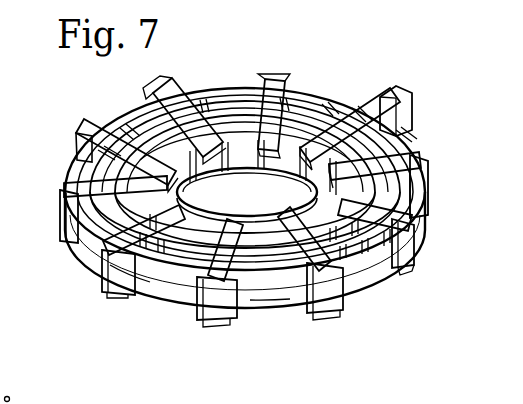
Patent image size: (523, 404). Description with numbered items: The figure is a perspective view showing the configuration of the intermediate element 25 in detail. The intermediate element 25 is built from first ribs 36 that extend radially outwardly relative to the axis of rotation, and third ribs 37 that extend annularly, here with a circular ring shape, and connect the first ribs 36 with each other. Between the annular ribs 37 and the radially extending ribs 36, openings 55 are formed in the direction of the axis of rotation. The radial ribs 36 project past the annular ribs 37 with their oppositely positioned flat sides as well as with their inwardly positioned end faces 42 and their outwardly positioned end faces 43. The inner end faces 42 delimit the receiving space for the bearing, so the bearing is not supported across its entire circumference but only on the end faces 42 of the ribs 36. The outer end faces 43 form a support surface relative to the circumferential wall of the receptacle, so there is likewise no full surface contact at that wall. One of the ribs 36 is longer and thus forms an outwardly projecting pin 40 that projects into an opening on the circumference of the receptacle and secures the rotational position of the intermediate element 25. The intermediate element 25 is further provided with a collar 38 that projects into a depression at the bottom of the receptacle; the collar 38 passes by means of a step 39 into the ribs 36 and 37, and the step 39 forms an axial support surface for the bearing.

The intermediate element 25 is at (340, 78).
The first ribs 36 is at (130, 250).
The third ribs 37 is at (207, 240).
The collar 38 is at (262, 190).
The step 39 is at (233, 160).
The outwardly projecting pin 40 is at (386, 96).
The inwardly positioned end faces 42 is at (180, 165).
The outwardly positioned end faces 43 is at (407, 243).
The openings 55 is at (140, 170).